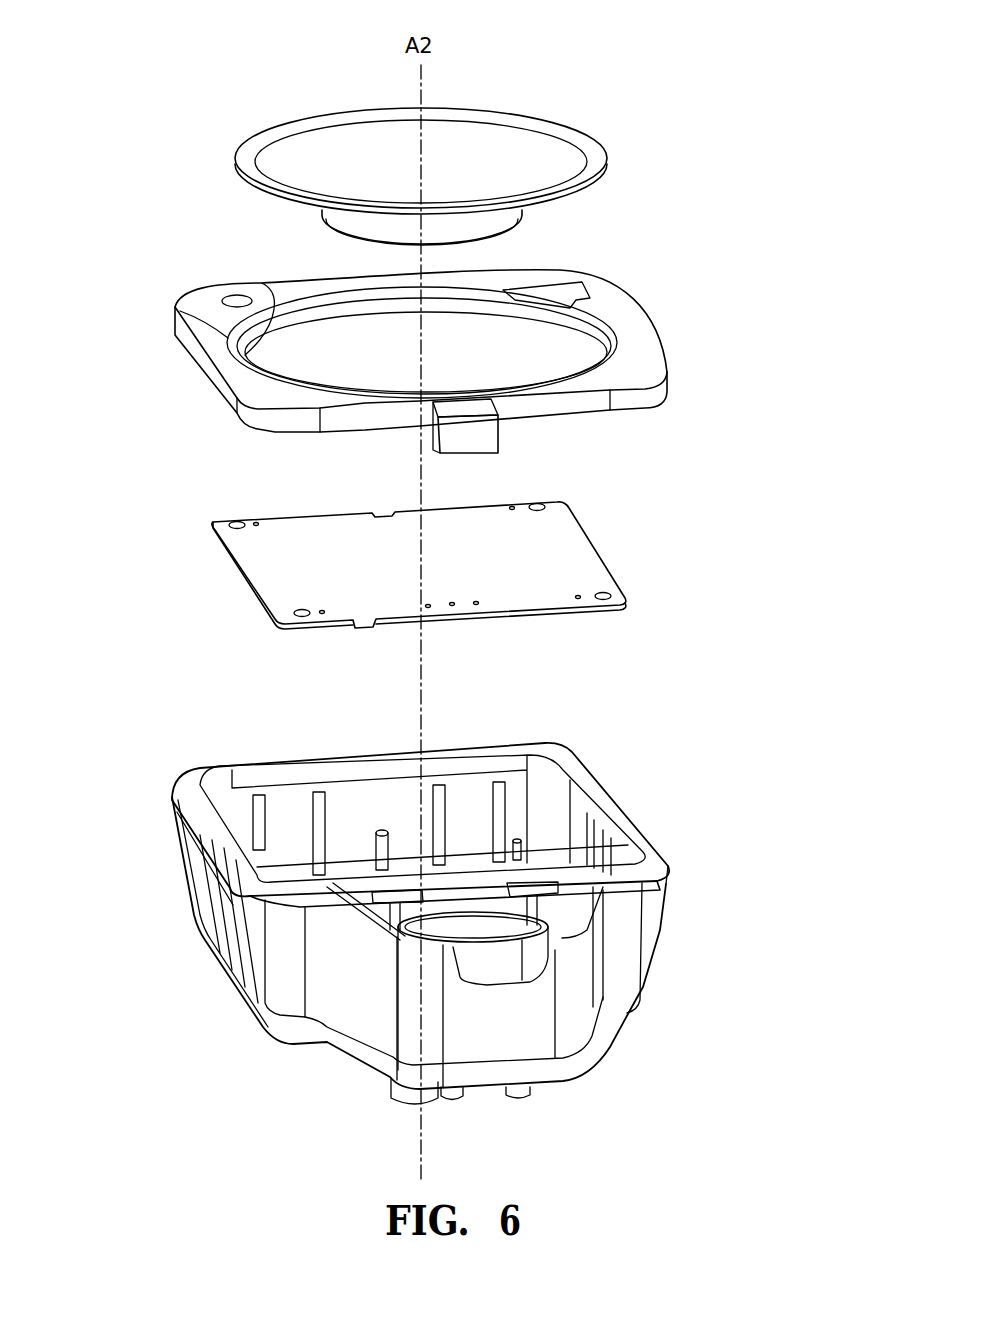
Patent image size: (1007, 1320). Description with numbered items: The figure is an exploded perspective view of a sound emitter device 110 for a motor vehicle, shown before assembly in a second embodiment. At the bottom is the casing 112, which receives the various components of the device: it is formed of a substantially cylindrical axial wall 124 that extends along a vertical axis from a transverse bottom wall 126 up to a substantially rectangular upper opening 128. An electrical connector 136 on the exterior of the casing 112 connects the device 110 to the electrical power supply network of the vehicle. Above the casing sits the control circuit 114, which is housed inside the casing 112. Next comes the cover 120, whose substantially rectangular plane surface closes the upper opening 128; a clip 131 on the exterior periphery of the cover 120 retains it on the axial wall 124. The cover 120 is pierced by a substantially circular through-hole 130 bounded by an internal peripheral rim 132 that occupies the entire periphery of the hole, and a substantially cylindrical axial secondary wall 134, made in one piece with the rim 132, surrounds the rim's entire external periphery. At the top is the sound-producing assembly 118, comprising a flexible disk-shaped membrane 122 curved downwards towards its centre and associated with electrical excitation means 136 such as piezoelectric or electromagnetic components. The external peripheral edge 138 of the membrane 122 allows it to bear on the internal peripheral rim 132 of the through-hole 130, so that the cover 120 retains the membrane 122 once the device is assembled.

The sound emitter device 110 is at (165, 83).
The casing 112 is at (675, 912).
The control circuit 114 is at (590, 567).
The sound-producing assembly 118 is at (545, 88).
The cover 120 is at (683, 360).
The membrane 122 is at (332, 133).
The axial wall 124 is at (230, 913).
The bottom wall 126 is at (290, 1045).
The upper opening 128 is at (556, 782).
The through-hole 130 is at (553, 352).
The clip 131 is at (488, 434).
The internal peripheral rim 132 is at (607, 345).
The axial secondary wall 134 is at (175, 305).
The electrical connector 136 is at (510, 220).
The external peripheral edge 138 is at (595, 133).